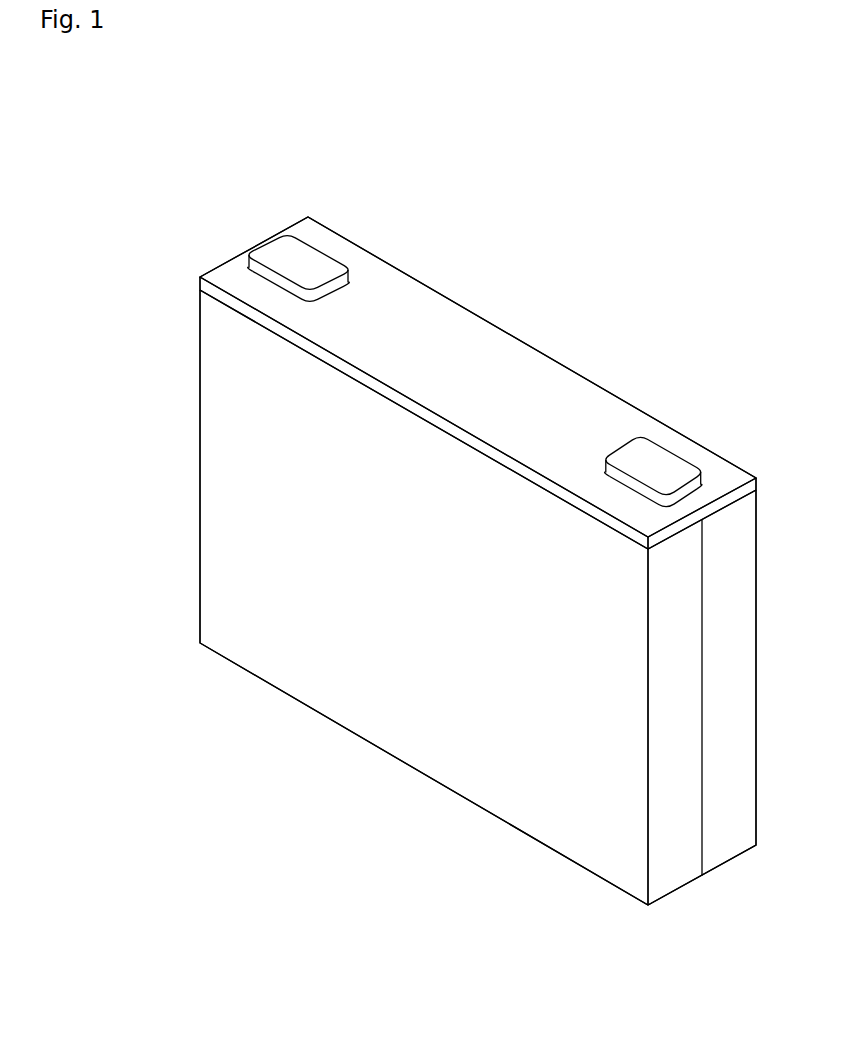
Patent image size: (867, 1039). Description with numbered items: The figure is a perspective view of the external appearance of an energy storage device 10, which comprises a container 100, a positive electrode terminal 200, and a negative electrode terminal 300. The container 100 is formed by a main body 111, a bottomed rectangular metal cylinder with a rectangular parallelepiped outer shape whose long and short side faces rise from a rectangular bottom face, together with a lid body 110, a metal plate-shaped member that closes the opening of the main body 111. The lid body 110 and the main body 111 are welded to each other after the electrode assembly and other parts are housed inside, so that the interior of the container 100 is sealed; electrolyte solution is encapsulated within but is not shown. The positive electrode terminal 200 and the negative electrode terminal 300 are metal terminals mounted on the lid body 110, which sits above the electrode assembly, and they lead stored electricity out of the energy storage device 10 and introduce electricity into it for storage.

The energy storage device 10 is at (497, 271).
The container 100 is at (140, 312).
The lid body 110 is at (228, 297).
The main body 111 is at (217, 355).
The positive electrode terminal 200 is at (300, 260).
The negative electrode terminal 300 is at (650, 467).